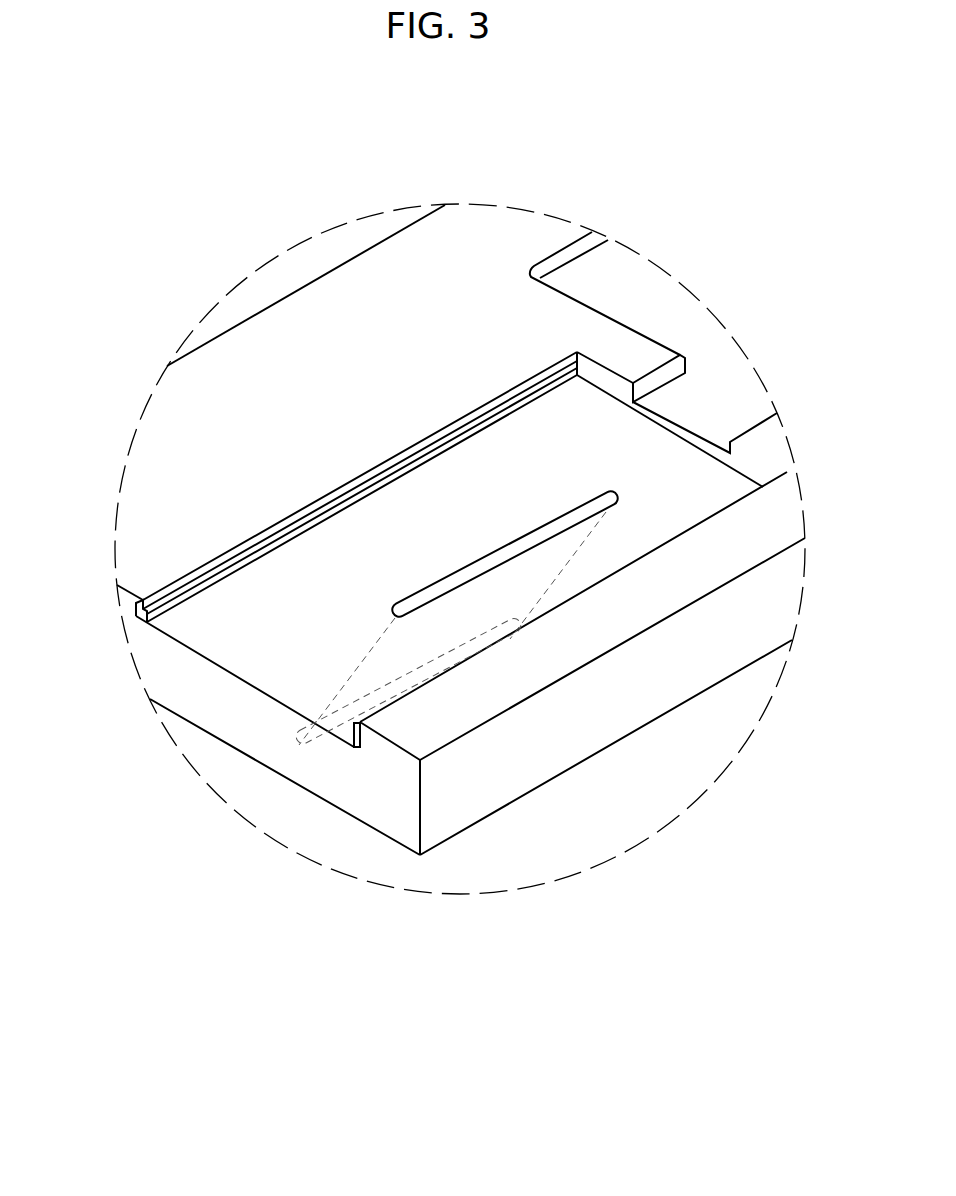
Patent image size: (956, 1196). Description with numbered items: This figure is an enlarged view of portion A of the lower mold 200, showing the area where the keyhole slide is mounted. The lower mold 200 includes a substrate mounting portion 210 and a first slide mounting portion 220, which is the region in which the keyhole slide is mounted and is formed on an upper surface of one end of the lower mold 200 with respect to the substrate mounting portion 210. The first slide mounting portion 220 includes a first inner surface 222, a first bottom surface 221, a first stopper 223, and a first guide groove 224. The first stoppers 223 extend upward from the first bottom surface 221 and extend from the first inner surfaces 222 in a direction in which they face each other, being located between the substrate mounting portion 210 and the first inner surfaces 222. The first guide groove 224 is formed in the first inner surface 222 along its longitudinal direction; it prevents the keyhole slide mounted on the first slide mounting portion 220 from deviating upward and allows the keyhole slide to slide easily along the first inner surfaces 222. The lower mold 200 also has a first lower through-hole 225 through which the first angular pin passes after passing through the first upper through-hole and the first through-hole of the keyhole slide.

The lower mold 200 is at (630, 737).
The substrate mounting portion 210 is at (682, 344).
The first slide mounting portion 220 is at (683, 178).
The first bottom surface 221 is at (485, 485).
The first inner surface 222 is at (558, 383).
The first stopper 223 is at (605, 384).
The first guide groove 224 is at (173, 585).
The first lower through-hole 225 is at (494, 562).
The portion A is at (246, 281).